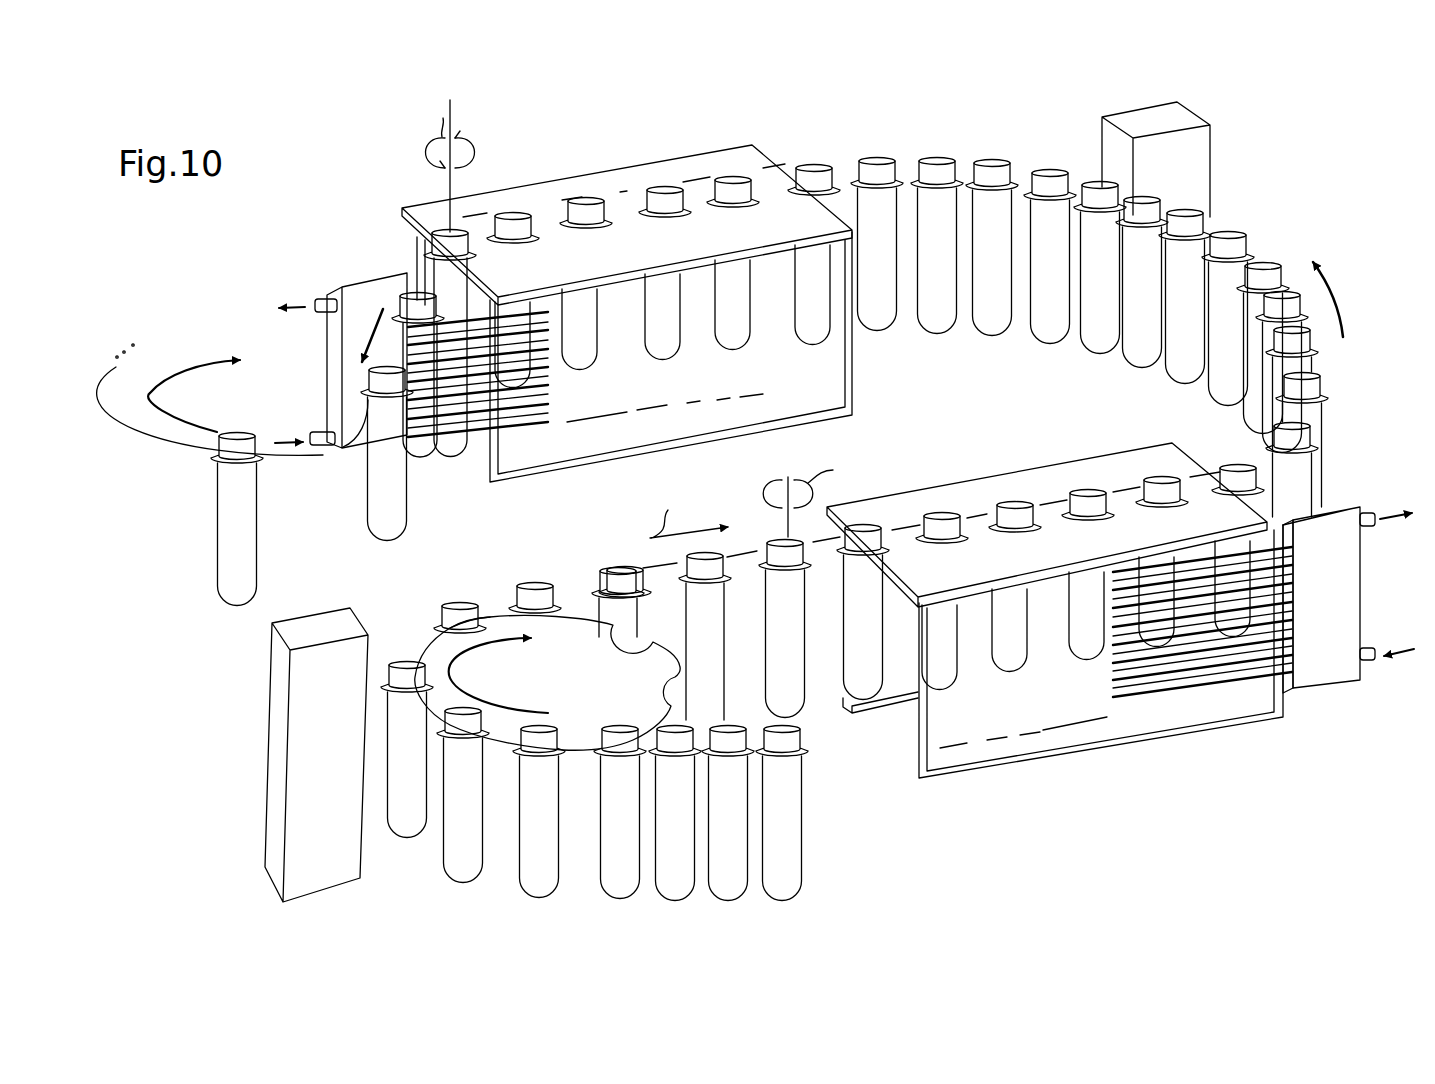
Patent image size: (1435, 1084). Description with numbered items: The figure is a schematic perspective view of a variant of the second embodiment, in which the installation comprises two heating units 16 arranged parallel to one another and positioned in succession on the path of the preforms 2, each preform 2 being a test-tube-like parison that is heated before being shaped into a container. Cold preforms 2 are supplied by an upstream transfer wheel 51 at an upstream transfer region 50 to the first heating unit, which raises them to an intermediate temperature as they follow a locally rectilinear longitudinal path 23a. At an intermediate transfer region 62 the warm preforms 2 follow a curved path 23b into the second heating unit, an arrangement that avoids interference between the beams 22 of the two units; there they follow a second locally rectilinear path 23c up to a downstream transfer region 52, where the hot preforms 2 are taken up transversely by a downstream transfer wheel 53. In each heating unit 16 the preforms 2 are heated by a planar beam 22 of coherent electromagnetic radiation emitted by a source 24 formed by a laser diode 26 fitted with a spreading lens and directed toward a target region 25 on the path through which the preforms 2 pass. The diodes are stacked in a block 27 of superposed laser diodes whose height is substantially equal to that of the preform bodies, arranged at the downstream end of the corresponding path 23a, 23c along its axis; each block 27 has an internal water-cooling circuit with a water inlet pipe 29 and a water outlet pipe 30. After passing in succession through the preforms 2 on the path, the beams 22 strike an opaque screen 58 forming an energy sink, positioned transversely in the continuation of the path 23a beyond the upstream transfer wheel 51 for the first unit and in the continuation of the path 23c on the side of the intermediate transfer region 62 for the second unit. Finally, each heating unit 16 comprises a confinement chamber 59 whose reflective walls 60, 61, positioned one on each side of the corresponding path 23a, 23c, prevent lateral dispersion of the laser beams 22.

The preform 2 is at (553, 888).
The heating unit 16 is at (850, 461).
The beam of coherent electromagnetic radiation 22 is at (1280, 656).
The path within the first heating unit 23a is at (1050, 497).
The path in the intermediate transfer region 23b is at (1338, 298).
The path within the second heating unit 23c is at (766, 176).
The source of coherent electromagnetic radiation 24 is at (1324, 644).
The target region 25 is at (1029, 682).
The laser diode 26 is at (1292, 690).
The block of superposed laser diodes 27 is at (850, 520).
The water inlet pipe 29 is at (323, 447).
The water outlet pipe 30 is at (320, 298).
The upstream transfer region 50 is at (547, 762).
The upstream transfer wheel 51 is at (488, 622).
The downstream transfer region 52 is at (172, 332).
The downstream transfer wheel 53 is at (153, 450).
The opaque screen 58 is at (272, 792).
The confinement chamber 59 is at (640, 158).
The reflective wall 60 is at (856, 377).
The reflective wall 61 is at (420, 250).
The intermediate transfer region 62 is at (1229, 204).